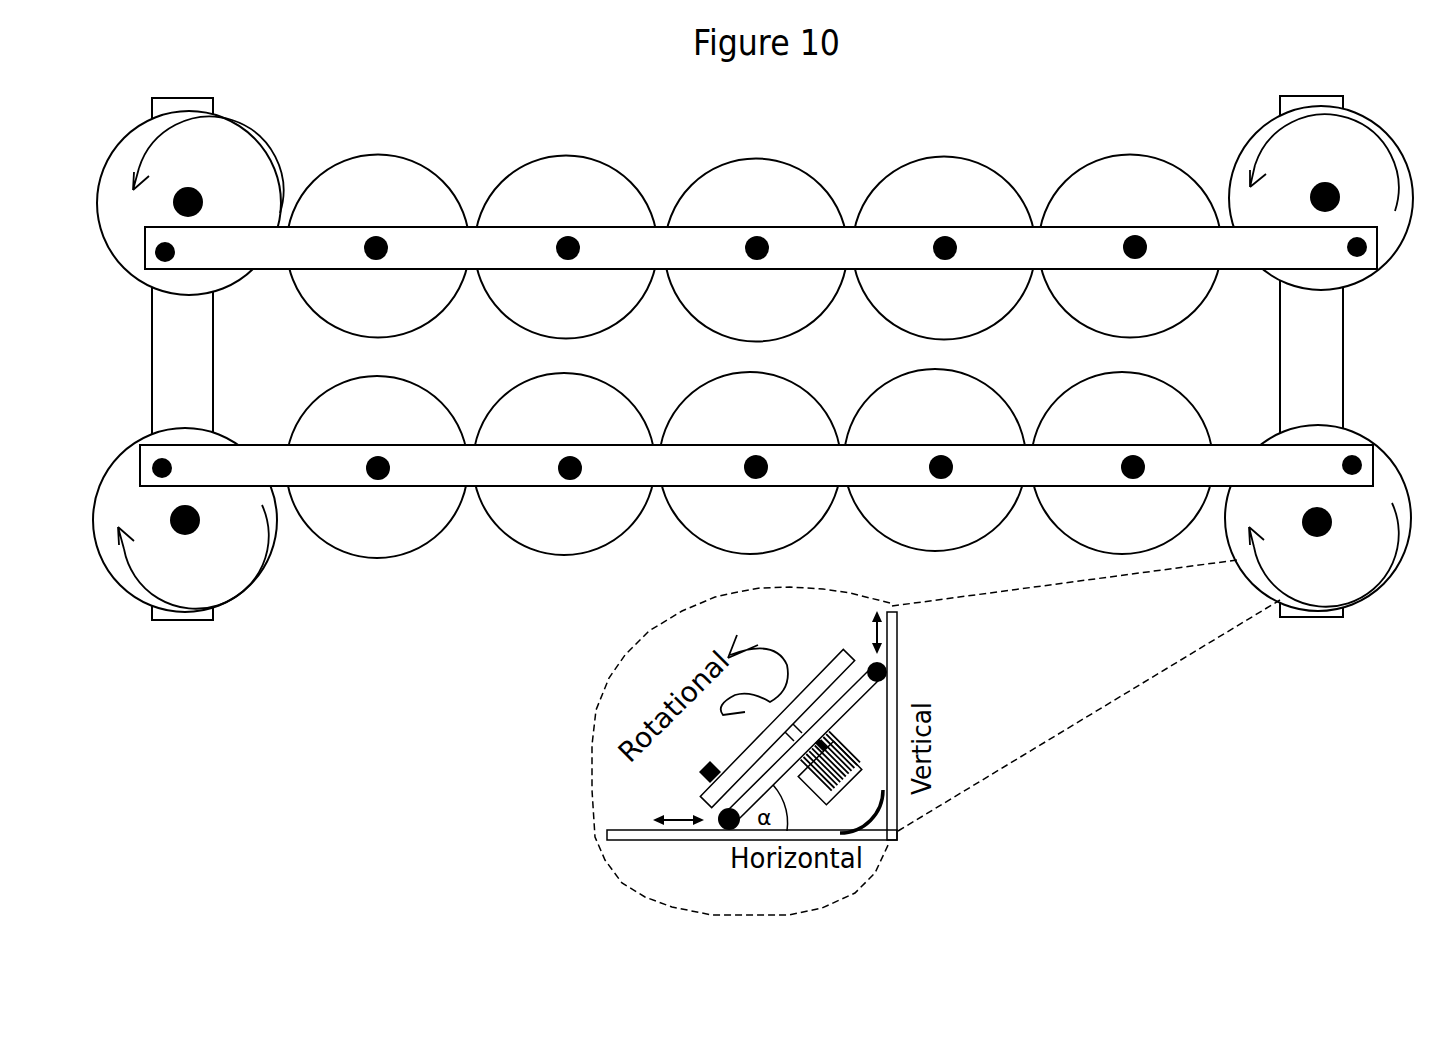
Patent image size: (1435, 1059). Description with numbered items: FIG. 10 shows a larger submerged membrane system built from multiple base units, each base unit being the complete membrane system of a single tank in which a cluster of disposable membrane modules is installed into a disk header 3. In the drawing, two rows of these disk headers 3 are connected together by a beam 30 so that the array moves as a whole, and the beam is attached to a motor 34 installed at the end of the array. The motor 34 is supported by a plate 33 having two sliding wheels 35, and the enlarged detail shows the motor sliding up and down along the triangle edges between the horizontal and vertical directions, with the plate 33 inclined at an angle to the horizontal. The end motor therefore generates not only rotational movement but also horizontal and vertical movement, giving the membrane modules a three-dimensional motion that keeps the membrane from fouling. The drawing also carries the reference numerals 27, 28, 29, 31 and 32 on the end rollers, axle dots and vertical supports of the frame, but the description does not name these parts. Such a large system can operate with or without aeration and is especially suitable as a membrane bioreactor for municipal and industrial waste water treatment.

The disk header 3 is at (378, 246).
The upper roller / roller bar 27 is at (829, 668).
The roller 28 is at (198, 193).
The pivot axle 29 is at (168, 461).
The beam 30 is at (756, 465).
The wafer axle 31 is at (574, 462).
The vertical support 32 is at (1311, 356).
The plate 33 is at (800, 748).
The motor 34 is at (837, 768).
The sliding wheels 35 is at (887, 670).